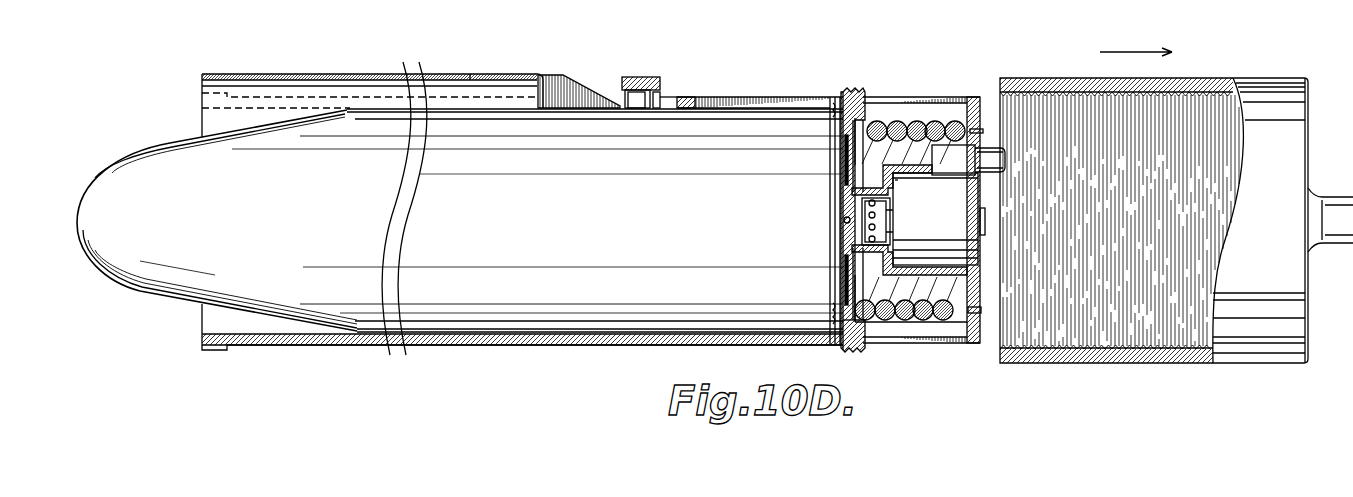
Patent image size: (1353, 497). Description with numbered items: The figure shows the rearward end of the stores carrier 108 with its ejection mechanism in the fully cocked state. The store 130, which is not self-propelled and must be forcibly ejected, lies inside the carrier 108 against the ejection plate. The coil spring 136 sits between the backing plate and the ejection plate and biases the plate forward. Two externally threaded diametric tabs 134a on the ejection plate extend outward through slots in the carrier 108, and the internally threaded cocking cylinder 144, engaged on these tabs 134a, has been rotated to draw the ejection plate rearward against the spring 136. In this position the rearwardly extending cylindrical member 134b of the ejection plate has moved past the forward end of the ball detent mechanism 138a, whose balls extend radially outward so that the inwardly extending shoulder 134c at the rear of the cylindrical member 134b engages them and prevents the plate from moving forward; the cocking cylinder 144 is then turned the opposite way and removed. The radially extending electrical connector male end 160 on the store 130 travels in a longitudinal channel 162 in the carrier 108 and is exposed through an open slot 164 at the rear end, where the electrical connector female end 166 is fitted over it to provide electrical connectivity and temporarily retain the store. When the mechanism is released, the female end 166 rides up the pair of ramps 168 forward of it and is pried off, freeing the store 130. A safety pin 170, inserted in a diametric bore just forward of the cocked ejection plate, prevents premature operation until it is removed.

The stores carrier 108 is at (520, 346).
The store 130 is at (175, 153).
The longitudinal channel 162 is at (470, 85).
The ramps 168 is at (572, 74).
The electrical connector female end 166 is at (638, 76).
The electrical connector male end 160 is at (660, 92).
The open slot 164 is at (675, 97).
The safety pin 170 is at (844, 220).
The diametric tabs 134a is at (853, 90).
The ball detent mechanism 138a is at (876, 198).
The coil spring 136 is at (930, 165).
The cylindrical member 134b is at (950, 108).
The shoulder 134c is at (865, 275).
The cocking cylinder 144 is at (1253, 78).